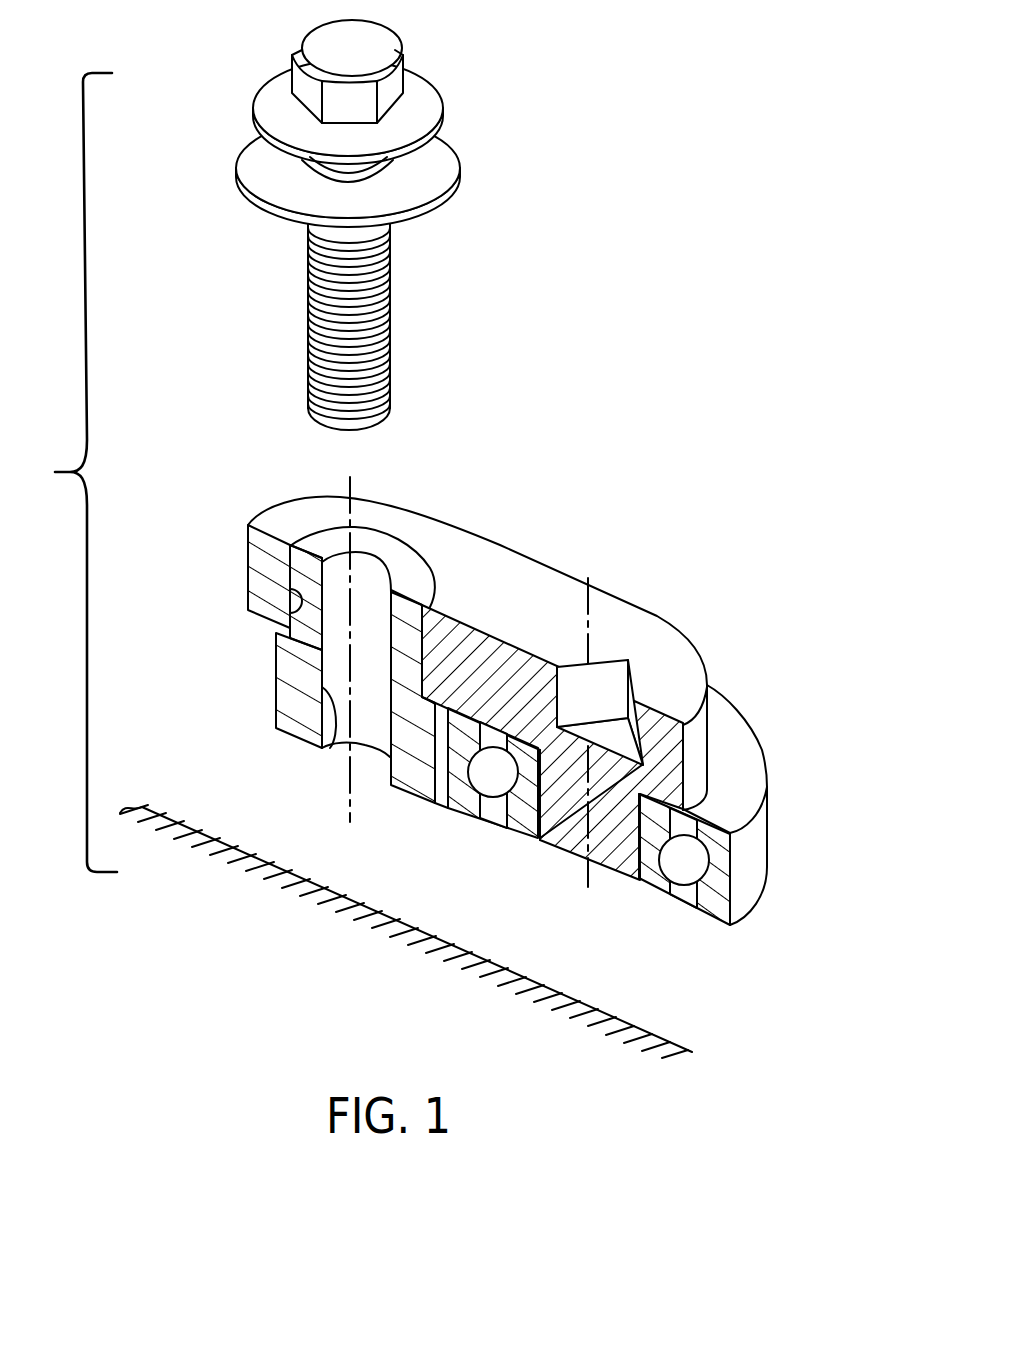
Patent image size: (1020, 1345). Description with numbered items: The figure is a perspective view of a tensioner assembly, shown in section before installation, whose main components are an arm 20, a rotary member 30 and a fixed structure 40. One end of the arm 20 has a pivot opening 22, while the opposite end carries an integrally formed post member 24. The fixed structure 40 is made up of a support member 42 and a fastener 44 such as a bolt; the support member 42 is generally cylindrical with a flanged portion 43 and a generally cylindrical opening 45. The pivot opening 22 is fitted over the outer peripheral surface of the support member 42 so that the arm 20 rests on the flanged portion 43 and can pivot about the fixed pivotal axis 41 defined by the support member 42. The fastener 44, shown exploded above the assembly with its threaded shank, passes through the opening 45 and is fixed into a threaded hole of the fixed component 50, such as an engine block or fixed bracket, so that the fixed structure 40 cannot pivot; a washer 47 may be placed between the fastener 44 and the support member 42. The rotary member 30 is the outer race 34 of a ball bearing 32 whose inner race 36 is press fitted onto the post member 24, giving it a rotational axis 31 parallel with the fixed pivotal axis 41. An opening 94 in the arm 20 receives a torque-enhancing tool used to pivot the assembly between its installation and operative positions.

The arm 20 is at (528, 557).
The pivot opening 22 is at (290, 622).
The post member 24 is at (611, 823).
The rotary member 30 is at (774, 840).
The rotational axis 31 is at (590, 617).
The ball bearing 32 is at (733, 752).
The outer race 34 is at (715, 912).
The inner race 36 is at (653, 890).
The fixed structure 40 is at (442, 79).
The fixed pivotal axis 41 is at (353, 490).
The support member 42 is at (318, 545).
The flanged portion 43 is at (275, 685).
The fastener 44 is at (372, 323).
The cylindrical opening 45 is at (332, 748).
The washer 47 is at (436, 177).
The fixed component 50 is at (625, 1023).
The opening 94 is at (633, 693).